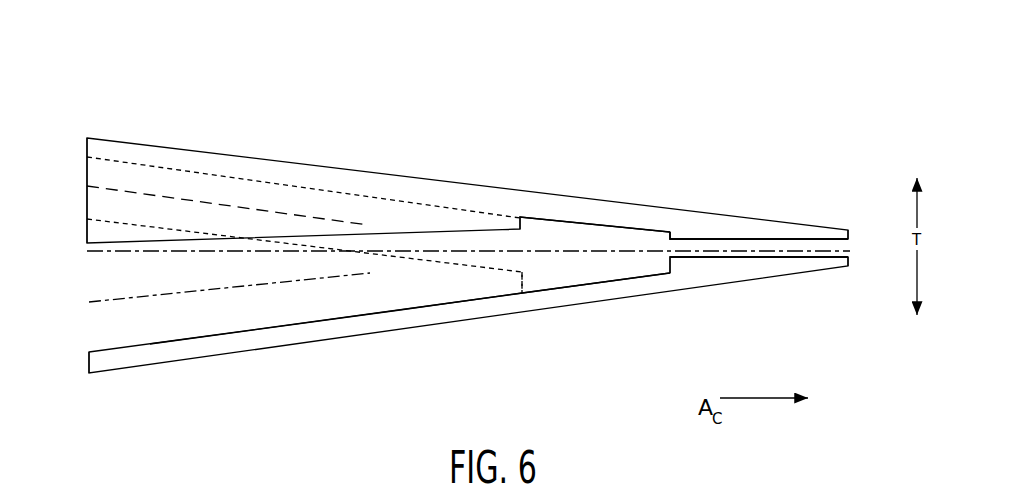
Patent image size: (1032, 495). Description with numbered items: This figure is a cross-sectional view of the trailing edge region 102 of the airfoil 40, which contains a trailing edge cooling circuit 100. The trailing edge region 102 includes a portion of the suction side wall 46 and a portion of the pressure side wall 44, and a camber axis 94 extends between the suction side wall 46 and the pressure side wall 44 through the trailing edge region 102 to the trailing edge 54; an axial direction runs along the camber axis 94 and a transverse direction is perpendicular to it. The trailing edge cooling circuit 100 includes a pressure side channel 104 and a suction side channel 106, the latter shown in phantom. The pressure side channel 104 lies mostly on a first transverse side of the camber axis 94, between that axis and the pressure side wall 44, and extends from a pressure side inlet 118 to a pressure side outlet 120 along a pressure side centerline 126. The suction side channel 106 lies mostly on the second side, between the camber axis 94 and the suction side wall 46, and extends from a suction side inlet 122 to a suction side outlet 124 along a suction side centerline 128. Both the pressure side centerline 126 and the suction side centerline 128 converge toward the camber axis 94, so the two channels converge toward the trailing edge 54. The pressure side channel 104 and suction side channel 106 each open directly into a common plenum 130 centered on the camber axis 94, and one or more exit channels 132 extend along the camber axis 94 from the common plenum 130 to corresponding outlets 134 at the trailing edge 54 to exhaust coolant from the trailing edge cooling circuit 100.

The airfoil 40 is at (696, 113).
The pressure side wall 44 is at (403, 315).
The suction side wall 46 is at (408, 177).
The trailing edge 54 is at (848, 230).
The camber axis 94 is at (779, 254).
The trailing edge cooling circuit 100 is at (609, 227).
The trailing edge region 102 is at (720, 163).
The pressure side channel 104 is at (271, 307).
The suction side channel 106 is at (286, 195).
The pressure side inlet 118 is at (99, 328).
The pressure side outlet 120 is at (539, 267).
The suction side inlet 122 is at (76, 167).
The suction side outlet 124 is at (531, 239).
The pressure side centerline 126 is at (193, 290).
The suction side centerline 128 is at (212, 203).
The common plenum 130 is at (603, 265).
The exit channel 132 is at (754, 236).
The outlet 134 is at (856, 250).